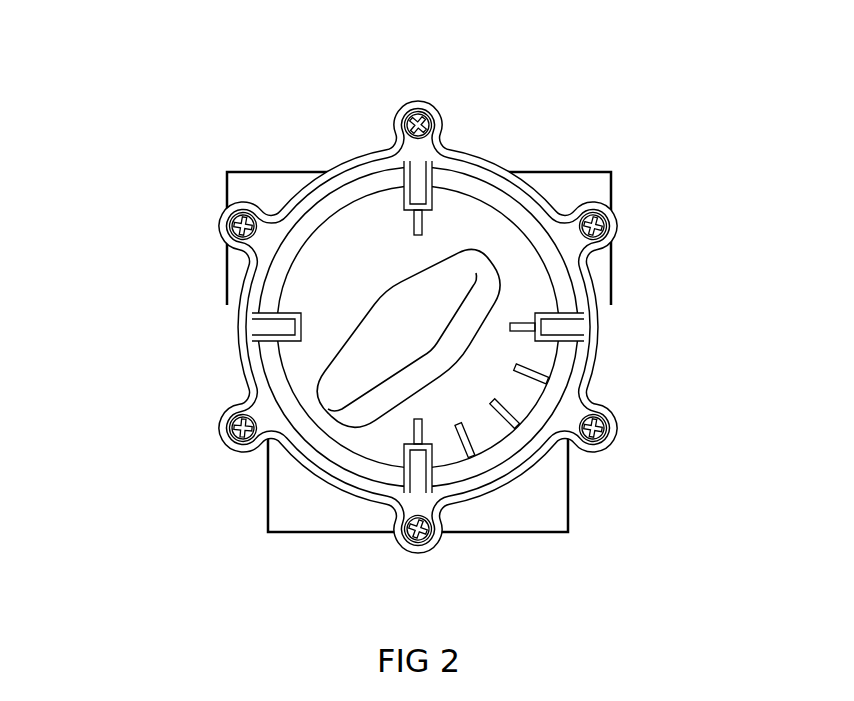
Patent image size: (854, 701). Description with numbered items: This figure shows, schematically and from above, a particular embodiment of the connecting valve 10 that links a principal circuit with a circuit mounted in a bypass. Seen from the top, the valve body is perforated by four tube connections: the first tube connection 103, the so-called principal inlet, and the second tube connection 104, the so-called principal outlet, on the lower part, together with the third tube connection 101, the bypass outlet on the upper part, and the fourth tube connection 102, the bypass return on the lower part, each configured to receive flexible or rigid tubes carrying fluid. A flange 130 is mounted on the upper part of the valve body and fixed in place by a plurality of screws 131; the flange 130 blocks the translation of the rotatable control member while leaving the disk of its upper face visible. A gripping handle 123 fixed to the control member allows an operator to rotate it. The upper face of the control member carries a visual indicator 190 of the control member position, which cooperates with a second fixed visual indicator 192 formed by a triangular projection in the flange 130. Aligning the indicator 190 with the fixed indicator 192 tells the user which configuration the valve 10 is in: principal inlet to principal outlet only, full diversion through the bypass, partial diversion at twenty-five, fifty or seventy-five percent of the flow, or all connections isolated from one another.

The connecting valve 10 is at (488, 136).
The third tube connection 101 is at (287, 483).
The fourth tube connection 102 is at (515, 513).
The first tube connection 103 is at (265, 178).
The second tube connection 104 is at (583, 181).
The gripping handle 123 is at (357, 383).
The flange 130 is at (360, 157).
The screws 131 is at (418, 101).
The visual indicator 190 is at (505, 462).
The second fixed visual indicator 192 is at (428, 215).